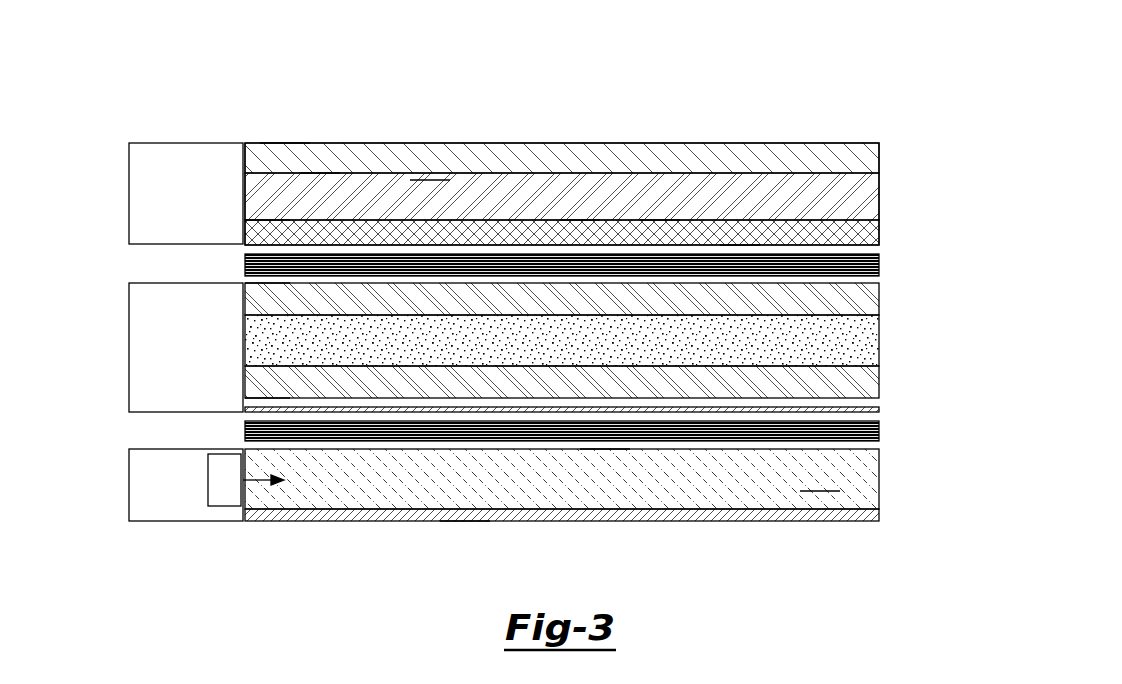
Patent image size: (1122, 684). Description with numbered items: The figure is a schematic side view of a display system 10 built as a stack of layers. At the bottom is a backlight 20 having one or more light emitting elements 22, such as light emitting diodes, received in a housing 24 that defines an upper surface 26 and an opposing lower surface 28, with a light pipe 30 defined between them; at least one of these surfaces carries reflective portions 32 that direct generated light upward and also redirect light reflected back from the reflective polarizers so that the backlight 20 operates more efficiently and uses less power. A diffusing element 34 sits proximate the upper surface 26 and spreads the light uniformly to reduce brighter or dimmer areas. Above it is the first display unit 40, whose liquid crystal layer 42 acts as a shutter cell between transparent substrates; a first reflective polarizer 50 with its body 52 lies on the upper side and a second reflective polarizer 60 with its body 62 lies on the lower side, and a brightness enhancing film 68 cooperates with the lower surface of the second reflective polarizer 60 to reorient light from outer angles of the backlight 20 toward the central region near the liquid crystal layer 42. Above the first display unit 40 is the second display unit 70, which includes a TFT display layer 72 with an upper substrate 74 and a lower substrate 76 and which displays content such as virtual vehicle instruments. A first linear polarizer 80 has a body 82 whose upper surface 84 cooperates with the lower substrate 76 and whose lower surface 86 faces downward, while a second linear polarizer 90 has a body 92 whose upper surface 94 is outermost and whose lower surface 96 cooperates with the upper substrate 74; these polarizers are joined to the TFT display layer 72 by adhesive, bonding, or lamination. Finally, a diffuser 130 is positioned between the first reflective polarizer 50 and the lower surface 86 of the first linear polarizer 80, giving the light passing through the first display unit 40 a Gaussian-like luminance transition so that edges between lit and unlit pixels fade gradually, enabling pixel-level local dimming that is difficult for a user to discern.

The display system 10 is at (895, 45).
The backlight 20 is at (117, 476).
The light emitting elements 22 is at (215, 480).
The housing 24 is at (697, 489).
The upper surface 26 is at (606, 444).
The lower surface 28 is at (880, 515).
The light pipe 30 is at (831, 491).
The reflective portions 32 is at (464, 522).
The diffusing element 34 is at (232, 428).
The first display unit 40 is at (117, 341).
The liquid crystal layer 42 is at (892, 339).
The first reflective polarizer 50 is at (892, 300).
The body 52 is at (255, 303).
The second reflective polarizer 60 is at (892, 372).
The body 62 is at (255, 383).
The brightness enhancing film 68 is at (892, 408).
The second display unit 70 is at (117, 191).
The TFT display layer 72 is at (892, 195).
The upper substrate 74 is at (430, 177).
The lower substrate 76 is at (578, 219).
The first linear polarizer 80 is at (892, 232).
The body 82 is at (255, 235).
The upper surface 84 is at (660, 219).
The lower surface 86 is at (742, 245).
The second linear polarizer 90 is at (850, 130).
The body 92 is at (255, 160).
The upper surface 94 is at (285, 143).
The lower surface 96 is at (316, 174).
The diffuser 130 is at (232, 261).